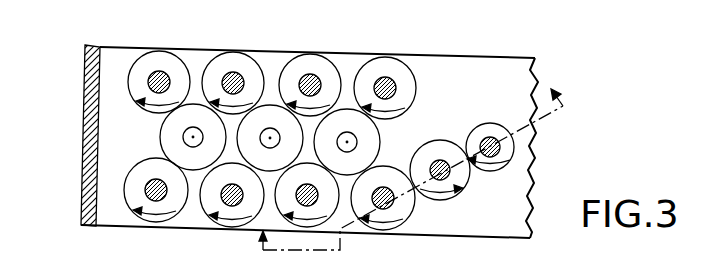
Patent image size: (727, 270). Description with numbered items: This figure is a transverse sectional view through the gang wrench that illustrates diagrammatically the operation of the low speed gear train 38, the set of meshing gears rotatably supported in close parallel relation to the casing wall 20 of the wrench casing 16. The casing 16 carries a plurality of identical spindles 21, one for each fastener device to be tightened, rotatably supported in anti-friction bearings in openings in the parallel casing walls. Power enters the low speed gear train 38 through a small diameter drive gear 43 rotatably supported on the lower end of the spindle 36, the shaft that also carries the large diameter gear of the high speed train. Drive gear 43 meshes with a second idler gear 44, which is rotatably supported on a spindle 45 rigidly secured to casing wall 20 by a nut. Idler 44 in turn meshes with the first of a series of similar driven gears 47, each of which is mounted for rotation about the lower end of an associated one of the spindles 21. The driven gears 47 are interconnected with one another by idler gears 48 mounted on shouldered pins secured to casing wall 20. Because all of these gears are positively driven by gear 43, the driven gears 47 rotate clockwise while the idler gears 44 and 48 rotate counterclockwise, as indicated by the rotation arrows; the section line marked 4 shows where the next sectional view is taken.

The casing 16 is at (72, 135).
The casing wall 20 is at (308, 135).
The small diameter drive gear 43 is at (546, 148).
The driven gears 47 is at (279, 146).
The spindles 21 is at (271, 130).
The idler gears 48 is at (272, 139).
The low speed gear train 38 is at (126, 114).
The second idler gear 44 is at (454, 186).
The spindle 45 is at (438, 148).
The spindle 36 is at (493, 134).
The section line 4- 4 is at (405, 175).